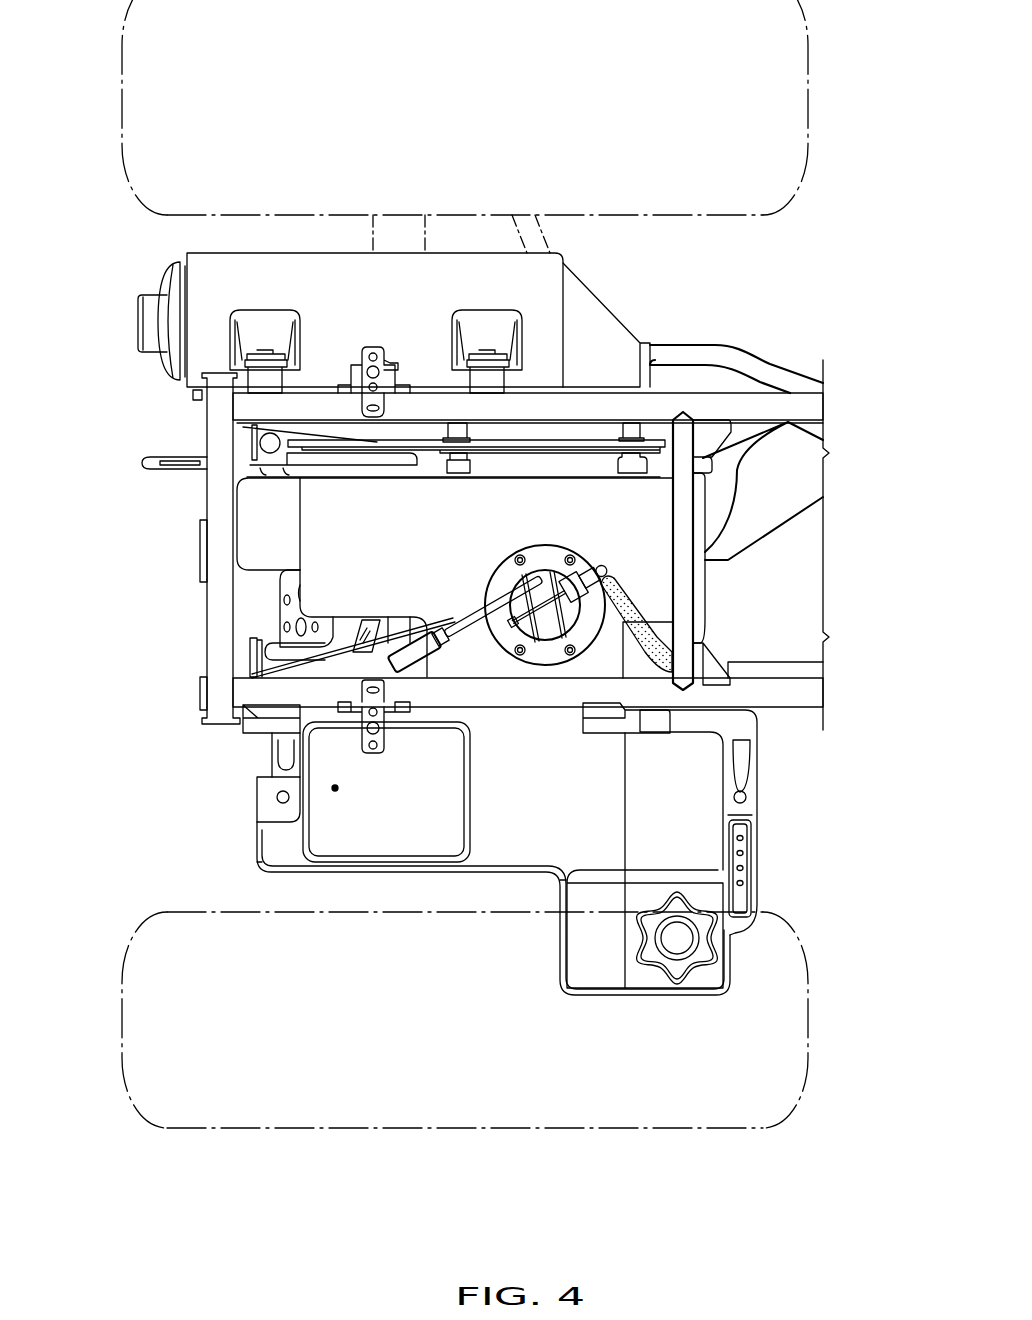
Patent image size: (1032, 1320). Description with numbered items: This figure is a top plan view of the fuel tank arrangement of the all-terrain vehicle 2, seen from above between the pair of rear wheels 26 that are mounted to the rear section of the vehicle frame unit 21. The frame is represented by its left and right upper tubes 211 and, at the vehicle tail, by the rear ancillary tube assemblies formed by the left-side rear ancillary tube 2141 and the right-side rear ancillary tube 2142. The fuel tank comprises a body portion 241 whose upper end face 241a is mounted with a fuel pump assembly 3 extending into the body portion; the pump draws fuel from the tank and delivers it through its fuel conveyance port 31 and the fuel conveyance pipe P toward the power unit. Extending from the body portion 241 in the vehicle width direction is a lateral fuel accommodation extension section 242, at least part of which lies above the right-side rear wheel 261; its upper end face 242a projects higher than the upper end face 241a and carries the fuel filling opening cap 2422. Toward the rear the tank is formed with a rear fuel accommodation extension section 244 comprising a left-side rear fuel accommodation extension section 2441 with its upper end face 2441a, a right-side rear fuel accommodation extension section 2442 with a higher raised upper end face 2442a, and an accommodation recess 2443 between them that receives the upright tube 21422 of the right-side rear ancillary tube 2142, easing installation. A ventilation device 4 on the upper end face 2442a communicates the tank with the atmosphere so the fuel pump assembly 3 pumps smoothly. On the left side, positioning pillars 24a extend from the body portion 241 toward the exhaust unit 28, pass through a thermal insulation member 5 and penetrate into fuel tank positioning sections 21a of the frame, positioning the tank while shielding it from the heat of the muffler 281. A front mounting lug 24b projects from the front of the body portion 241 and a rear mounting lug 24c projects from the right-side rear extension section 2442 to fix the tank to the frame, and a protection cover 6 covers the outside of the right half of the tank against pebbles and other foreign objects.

The all-terrain vehicle 2 is at (830, 326).
The fuel pump assembly 3 is at (547, 557).
The ventilation device 4 is at (332, 788).
The thermal insulation member 5 is at (565, 447).
The protection cover 6 is at (280, 870).
The vehicle frame unit 21 is at (183, 693).
The fuel tank positioning sections 21a is at (633, 467).
The upper tubes 211 is at (795, 407).
The left-side rear ancillary tube 2141 is at (283, 432).
The right-side rear ancillary tube 2142 is at (285, 660).
The upright tube 21422 is at (245, 725).
The positioning pillars 24a is at (548, 487).
The front mounting lug 24b is at (752, 812).
The rear mounting lug 24c is at (278, 810).
The body portion 241 is at (707, 822).
The upper end face 241a is at (555, 800).
The lateral fuel accommodation extension section 242 is at (600, 950).
The upper end face 242a is at (628, 960).
The fuel filling opening cap 2422 is at (700, 938).
The rear fuel accommodation extension section 244 is at (100, 522).
The left-side rear fuel accommodation extension section 2441 is at (302, 517).
The upper end face 2441a is at (362, 555).
The accommodation recess 2443 is at (325, 638).
The right-side rear fuel accommodation extension section 2442 is at (446, 1014).
The upper end face 2442a is at (418, 862).
The rear wheels 26 is at (790, 158).
The right-side rear wheel 261 is at (790, 1040).
The exhaust unit 28 is at (130, 332).
The muffler 281 is at (158, 370).
The fuel conveyance port 31 is at (604, 568).
The fuel conveyance pipe P is at (640, 615).